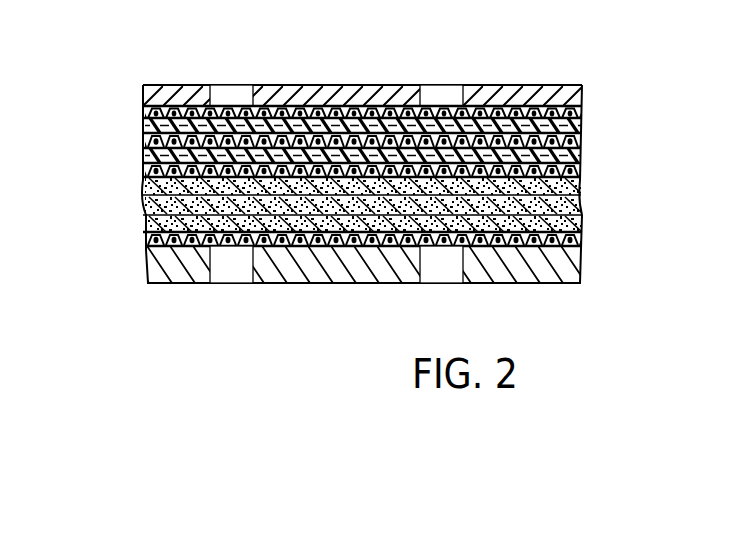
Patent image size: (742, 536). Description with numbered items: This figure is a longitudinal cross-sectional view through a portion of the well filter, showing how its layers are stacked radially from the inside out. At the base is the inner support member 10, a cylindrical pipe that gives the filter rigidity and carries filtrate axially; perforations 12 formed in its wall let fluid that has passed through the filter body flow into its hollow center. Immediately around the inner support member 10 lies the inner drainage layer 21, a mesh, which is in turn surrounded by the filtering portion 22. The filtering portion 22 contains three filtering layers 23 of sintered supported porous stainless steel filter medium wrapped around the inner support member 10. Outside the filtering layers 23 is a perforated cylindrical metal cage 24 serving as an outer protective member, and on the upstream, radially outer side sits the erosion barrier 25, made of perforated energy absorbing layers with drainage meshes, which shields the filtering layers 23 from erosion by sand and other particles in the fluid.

The inner support member 10 is at (581, 250).
The perforations 12 is at (193, 240).
The inner drainage layer 21 is at (162, 238).
The filtering portion 22 is at (358, 251).
The filtering layer 23 is at (143, 190).
The perforated cylindrical metal cage 24 is at (140, 85).
The erosion barrier 25 is at (137, 107).